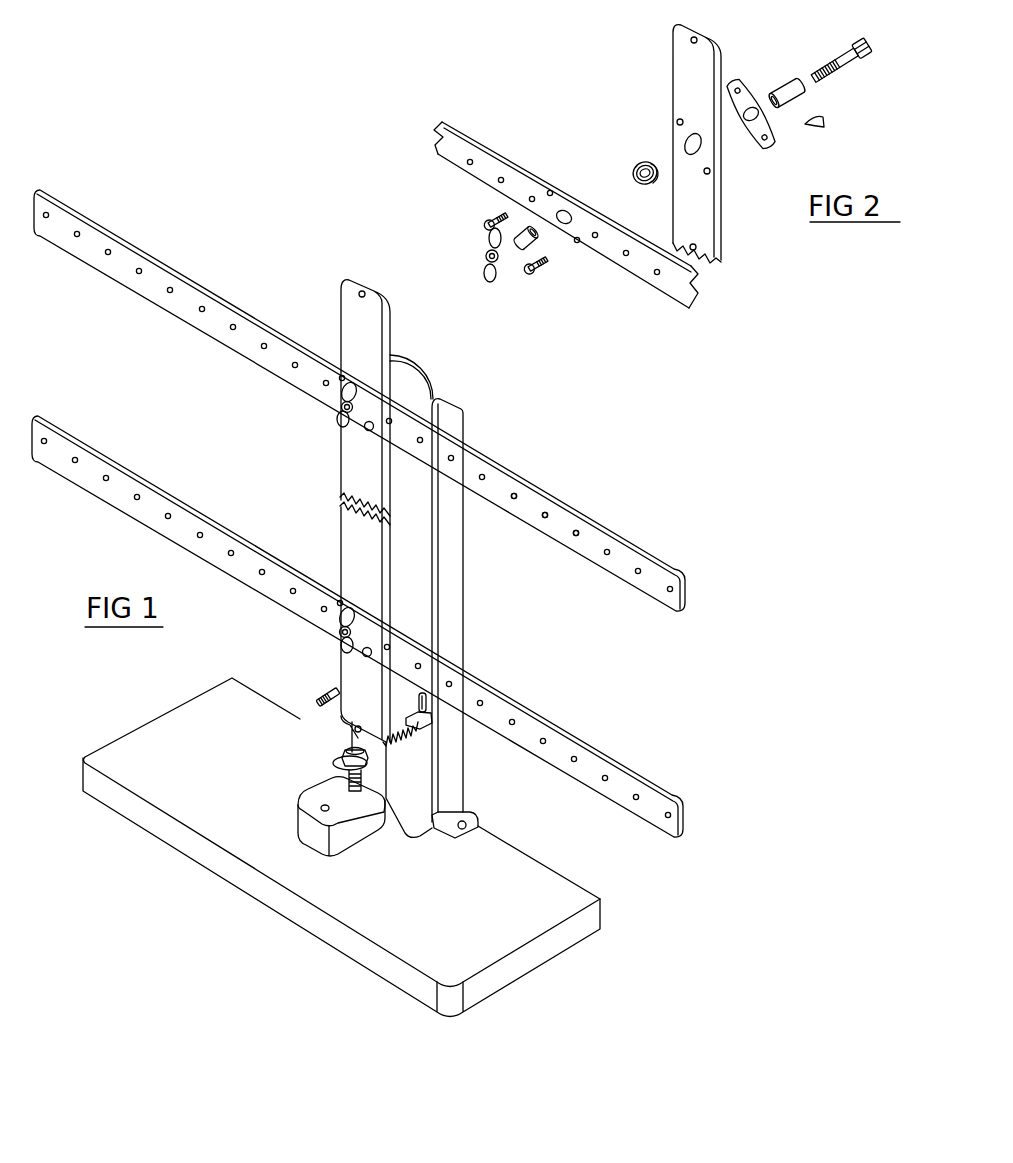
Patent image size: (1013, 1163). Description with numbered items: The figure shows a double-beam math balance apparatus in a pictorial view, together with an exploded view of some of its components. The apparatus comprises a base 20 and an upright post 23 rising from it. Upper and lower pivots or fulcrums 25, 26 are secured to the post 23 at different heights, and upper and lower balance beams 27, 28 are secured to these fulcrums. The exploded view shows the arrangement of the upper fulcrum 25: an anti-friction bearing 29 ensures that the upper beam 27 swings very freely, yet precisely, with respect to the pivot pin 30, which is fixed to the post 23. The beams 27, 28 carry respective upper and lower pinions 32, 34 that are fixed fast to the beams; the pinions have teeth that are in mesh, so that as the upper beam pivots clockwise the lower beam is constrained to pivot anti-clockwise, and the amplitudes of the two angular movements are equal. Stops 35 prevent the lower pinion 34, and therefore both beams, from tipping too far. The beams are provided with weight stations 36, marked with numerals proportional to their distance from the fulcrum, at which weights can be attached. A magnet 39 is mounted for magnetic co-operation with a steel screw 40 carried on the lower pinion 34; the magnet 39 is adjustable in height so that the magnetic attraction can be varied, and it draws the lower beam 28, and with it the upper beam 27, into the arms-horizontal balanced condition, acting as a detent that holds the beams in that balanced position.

In FIG. 1, the base 20 is at (538, 872).
In FIG. 1, the upright post 23 is at (453, 558).
In FIG. 1, the upper pivot or fulcrum 25 is at (341, 412).
In FIG. 2, the upper pivot or fulcrum 25 is at (826, 122).
In FIG. 1, the lower pivot or fulcrum 26 is at (338, 636).
In FIG. 1, the upper balance beam 27 is at (221, 300).
In FIG. 2, the upper balance beam 27 is at (462, 137).
In FIG. 1, the lower balance beam 28 is at (187, 505).
In FIG. 2, the anti-friction bearing 29 is at (640, 160).
In FIG. 2, the pivot pin 30 is at (863, 57).
In FIG. 1, the upper pinion 32 is at (370, 336).
In FIG. 2, the upper pinion 32 is at (704, 210).
In FIG. 1, the lower pinion 34 is at (346, 552).
In FIG. 1, the stops 35 is at (316, 693).
In FIG. 1, the weight stations 36 is at (577, 531).
In FIG. 1, the magnet 39 is at (348, 750).
In FIG. 1, the steel screw 40 is at (338, 716).